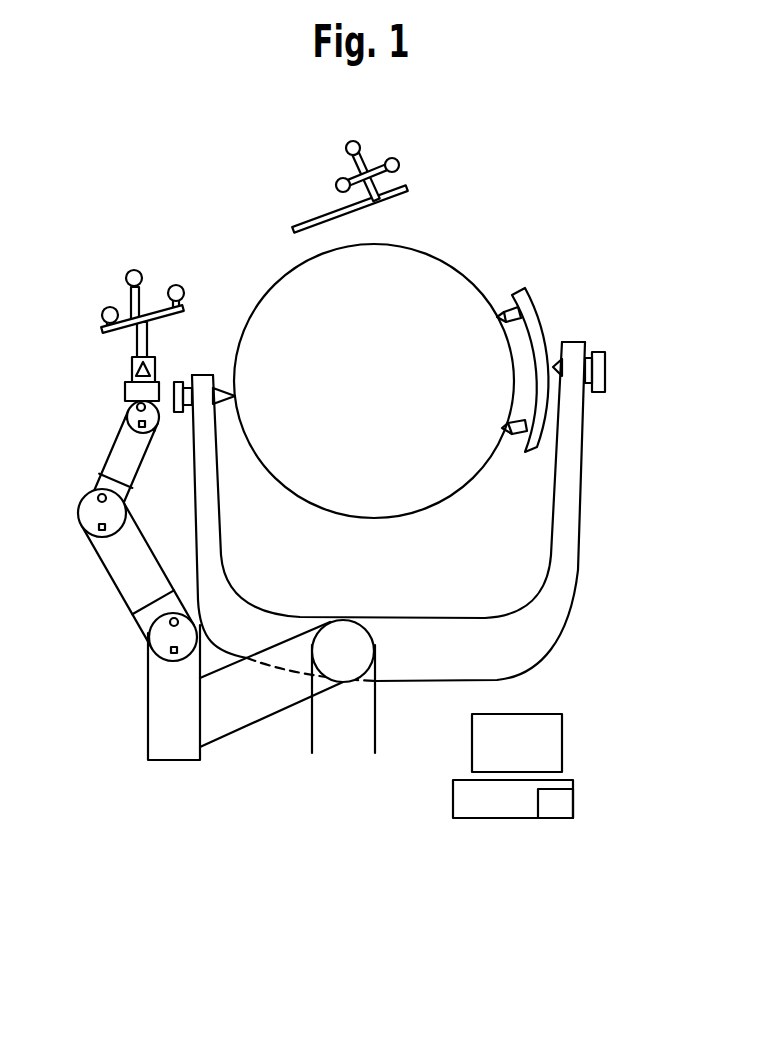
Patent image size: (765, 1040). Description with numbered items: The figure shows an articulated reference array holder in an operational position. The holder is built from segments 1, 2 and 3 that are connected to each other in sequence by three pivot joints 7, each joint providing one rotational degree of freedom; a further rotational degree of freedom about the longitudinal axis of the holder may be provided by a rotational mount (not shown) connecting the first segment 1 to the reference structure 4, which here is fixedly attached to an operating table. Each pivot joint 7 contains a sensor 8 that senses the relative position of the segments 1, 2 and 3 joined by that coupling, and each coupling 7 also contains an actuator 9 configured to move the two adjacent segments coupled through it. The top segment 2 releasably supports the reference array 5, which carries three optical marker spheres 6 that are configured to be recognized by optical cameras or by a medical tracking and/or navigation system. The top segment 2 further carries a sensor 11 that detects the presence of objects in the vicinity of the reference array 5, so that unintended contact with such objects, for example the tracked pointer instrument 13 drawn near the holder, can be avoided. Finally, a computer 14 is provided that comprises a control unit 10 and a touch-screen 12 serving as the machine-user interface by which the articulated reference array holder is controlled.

The first segment 1 is at (168, 748).
The top segment 2 is at (125, 387).
The segment 3 is at (120, 457).
The reference structure 4 is at (323, 720).
The reference array 5 is at (125, 272).
The optical marker spheres 6 is at (106, 311).
The pivot joint 7 is at (128, 417).
The sensor 8 is at (144, 427).
The actuator 9 is at (134, 405).
The control unit 10 is at (560, 805).
The sensor 11 is at (150, 363).
The touch-screen 12 is at (553, 742).
The tracked pointer instrument 13 is at (373, 207).
The computer 14 is at (506, 808).